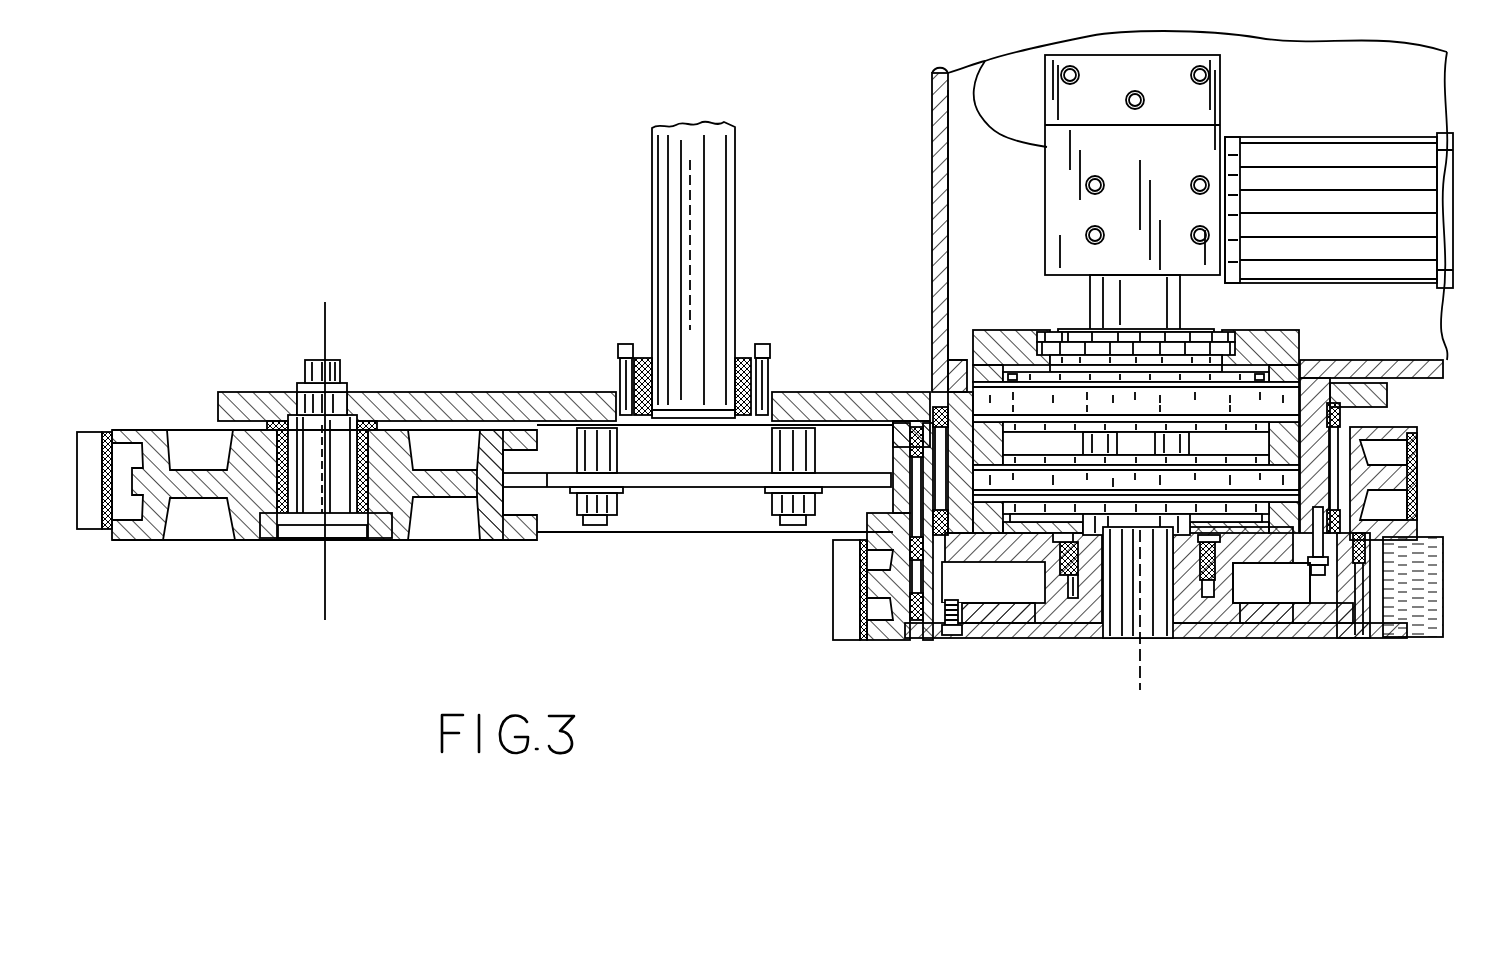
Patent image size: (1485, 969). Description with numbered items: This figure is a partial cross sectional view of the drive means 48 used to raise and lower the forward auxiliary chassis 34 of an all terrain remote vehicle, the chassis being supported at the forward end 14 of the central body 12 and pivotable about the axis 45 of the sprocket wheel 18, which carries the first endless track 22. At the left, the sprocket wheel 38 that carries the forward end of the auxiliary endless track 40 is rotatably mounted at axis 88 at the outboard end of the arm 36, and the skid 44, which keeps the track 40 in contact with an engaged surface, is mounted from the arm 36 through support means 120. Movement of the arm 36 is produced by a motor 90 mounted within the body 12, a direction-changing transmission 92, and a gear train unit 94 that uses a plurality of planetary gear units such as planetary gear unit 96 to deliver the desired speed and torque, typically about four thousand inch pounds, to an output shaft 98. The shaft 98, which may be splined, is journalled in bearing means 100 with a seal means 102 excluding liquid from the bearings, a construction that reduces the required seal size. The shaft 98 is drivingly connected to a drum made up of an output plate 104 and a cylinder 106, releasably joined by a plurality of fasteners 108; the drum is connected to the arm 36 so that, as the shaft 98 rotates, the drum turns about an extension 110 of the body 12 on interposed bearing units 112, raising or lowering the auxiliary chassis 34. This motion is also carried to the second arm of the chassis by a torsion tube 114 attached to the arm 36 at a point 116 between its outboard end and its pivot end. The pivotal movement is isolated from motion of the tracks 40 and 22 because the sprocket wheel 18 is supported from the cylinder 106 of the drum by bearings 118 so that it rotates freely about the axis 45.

The central body 12 is at (931, 140).
The forward end 14 is at (931, 202).
The sprocket wheel 18 is at (905, 636).
The first endless track 22 is at (833, 603).
The auxiliary chassis 34 is at (272, 390).
The arm 36 is at (232, 392).
The sprocket wheel 38 is at (140, 540).
The auxiliary endless track 40 is at (90, 532).
The skid 44 is at (700, 487).
The axis 45 is at (1140, 695).
The drive means 48 is at (1232, 134).
The axis 88 is at (325, 592).
The motor 90 is at (1337, 133).
The direction-changing transmission 92 is at (984, 64).
The gear train unit 94 is at (1000, 328).
The planetary gear unit 96 is at (975, 382).
The output shaft 98 is at (1165, 612).
The bearing means 100 is at (1045, 585).
The seal means 102 is at (1228, 588).
The output plate 104 is at (1300, 640).
The cylinder 106 is at (948, 630).
The fasteners 108 is at (958, 628).
The extension 110 is at (940, 405).
The bearing units 112 is at (893, 507).
The torsion tube 114 is at (652, 205).
The point 116 is at (622, 392).
The bearings 118 is at (1372, 550).
The support means 120 is at (610, 455).